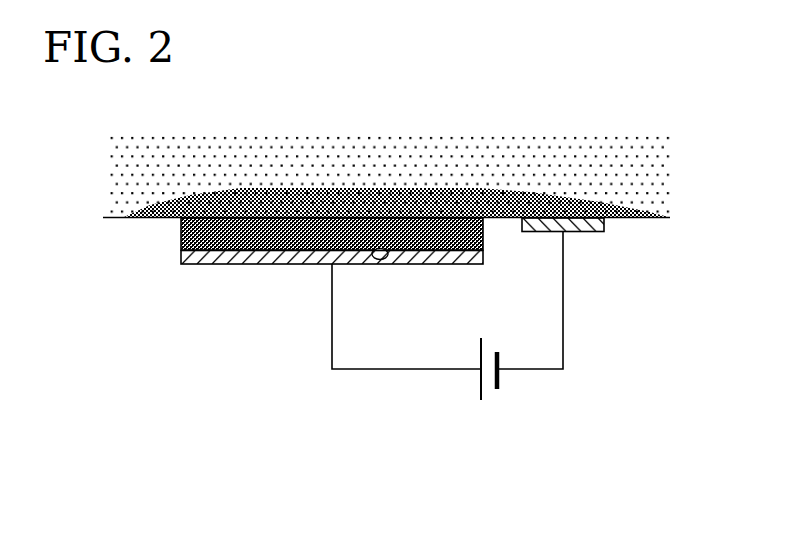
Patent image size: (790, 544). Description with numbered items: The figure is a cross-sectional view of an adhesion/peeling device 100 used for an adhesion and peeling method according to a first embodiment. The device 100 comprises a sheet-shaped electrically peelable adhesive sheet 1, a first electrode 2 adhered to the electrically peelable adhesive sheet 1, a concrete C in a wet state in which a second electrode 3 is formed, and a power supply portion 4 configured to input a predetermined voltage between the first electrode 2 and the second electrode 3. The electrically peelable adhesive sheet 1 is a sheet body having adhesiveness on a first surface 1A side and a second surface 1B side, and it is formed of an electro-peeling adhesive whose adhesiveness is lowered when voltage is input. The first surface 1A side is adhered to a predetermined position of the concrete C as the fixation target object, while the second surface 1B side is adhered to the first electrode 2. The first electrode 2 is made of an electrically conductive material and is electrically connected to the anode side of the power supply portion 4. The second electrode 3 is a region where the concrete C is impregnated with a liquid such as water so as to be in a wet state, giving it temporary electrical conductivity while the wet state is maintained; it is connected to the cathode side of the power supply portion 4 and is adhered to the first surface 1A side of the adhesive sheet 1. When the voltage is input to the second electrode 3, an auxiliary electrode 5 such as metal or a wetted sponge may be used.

The adhesion/peeling device 100 is at (379, 305).
The electrically peelable adhesive sheet 1 is at (306, 203).
The first surface 1A is at (278, 218).
The second surface 1B is at (388, 250).
The first electrode 2 is at (228, 265).
The second electrode 3 is at (522, 203).
The power supply portion 4 is at (480, 390).
The auxiliary electrode 5 is at (571, 200).
The concrete C is at (143, 218).